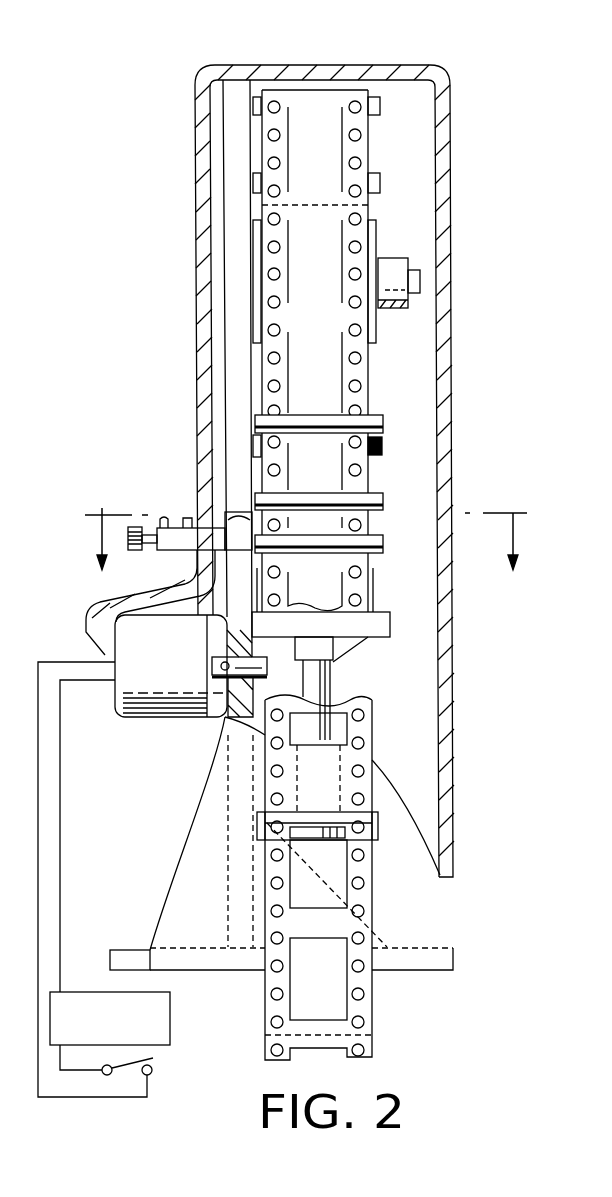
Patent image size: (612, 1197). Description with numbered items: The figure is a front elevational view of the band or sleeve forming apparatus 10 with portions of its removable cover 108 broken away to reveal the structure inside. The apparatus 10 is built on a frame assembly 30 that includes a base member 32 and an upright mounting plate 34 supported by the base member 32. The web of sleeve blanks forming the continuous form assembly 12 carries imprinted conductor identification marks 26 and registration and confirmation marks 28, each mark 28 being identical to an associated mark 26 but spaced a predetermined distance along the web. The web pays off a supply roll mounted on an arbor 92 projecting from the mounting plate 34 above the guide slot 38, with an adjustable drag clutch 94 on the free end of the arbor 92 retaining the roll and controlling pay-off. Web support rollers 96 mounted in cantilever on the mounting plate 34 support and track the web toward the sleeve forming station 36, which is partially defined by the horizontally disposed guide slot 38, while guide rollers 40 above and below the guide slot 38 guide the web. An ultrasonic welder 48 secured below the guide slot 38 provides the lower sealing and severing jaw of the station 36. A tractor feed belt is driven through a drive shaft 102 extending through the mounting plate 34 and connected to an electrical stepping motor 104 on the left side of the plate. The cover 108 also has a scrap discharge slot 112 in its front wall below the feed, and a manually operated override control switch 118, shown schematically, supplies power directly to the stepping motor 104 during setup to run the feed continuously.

The band or sleeve forming apparatus 10 is at (188, 64).
The continuous form assembly 12 is at (388, 372).
The conductor identification mark 26 is at (312, 248).
The registration and confirmation mark 28 is at (313, 193).
The frame assembly 30 is at (212, 327).
The base member 32 is at (130, 957).
The mounting plate 34 is at (233, 262).
The sleeve forming station 36 is at (389, 529).
The guide slot 38 is at (198, 520).
The guide roller 40 is at (373, 498).
The ultrasonic welder 48 is at (351, 663).
The arbor 92 is at (422, 277).
The adjustable drag clutch 94 is at (392, 262).
The web support roller 96 is at (370, 173).
The drive shaft 102 is at (227, 716).
The electrical stepping motor 104 is at (127, 683).
The cover 108 is at (193, 822).
The scrap discharge slot 112 is at (313, 815).
The override control switch 118 is at (140, 1056).